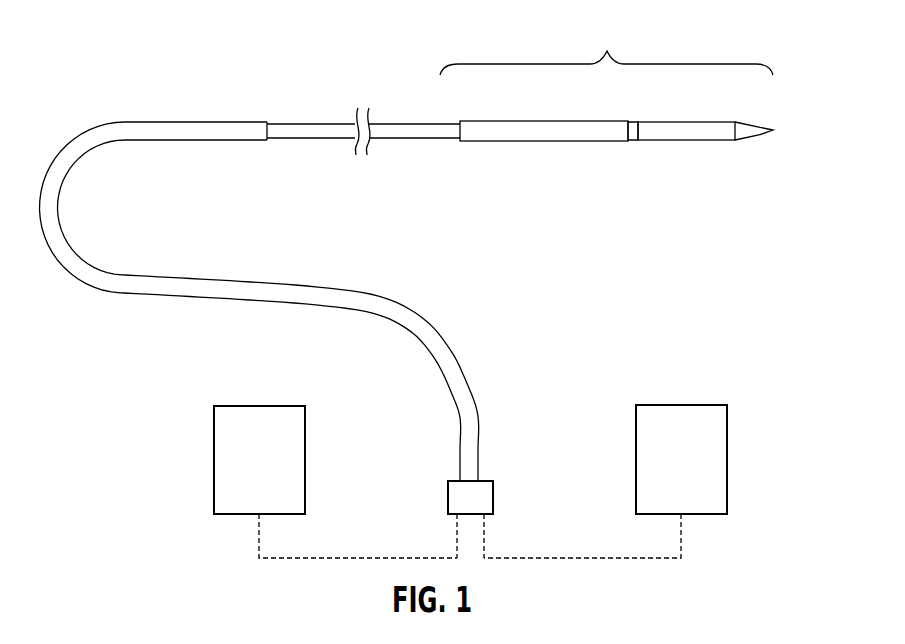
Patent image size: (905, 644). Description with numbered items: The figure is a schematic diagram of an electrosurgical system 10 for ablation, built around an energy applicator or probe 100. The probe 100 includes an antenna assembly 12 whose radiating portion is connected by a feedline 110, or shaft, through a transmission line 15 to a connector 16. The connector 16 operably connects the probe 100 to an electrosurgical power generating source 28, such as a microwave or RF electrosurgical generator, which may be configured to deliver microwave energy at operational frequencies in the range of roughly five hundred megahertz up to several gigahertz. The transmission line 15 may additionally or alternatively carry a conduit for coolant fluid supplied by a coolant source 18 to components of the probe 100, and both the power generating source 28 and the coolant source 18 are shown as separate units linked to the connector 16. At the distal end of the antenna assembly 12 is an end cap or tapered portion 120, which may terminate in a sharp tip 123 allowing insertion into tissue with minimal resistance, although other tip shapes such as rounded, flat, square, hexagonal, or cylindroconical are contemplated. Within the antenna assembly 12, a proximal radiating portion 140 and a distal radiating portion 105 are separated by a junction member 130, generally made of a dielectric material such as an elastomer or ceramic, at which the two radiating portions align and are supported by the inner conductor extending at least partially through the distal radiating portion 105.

The electrosurgical system 10 is at (153, 48).
The antenna assembly 12 is at (633, 116).
The transmission line 15 is at (201, 121).
The connector 16 is at (455, 481).
The coolant source 18 is at (681, 405).
The electrosurgical power generating source 28 is at (259, 406).
The probe 100 is at (488, 258).
The distal radiating portion 105 is at (692, 158).
The feedline 110 is at (413, 123).
The tapered portion 120 is at (752, 121).
The sharp tip 123 is at (773, 131).
The junction member 130 is at (633, 121).
The proximal radiating portion 140 is at (563, 157).